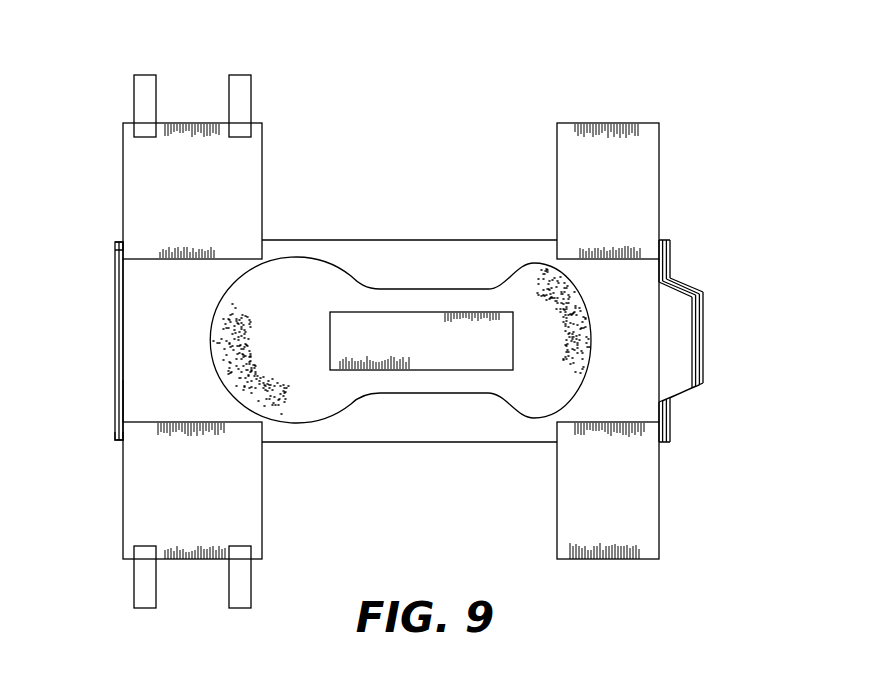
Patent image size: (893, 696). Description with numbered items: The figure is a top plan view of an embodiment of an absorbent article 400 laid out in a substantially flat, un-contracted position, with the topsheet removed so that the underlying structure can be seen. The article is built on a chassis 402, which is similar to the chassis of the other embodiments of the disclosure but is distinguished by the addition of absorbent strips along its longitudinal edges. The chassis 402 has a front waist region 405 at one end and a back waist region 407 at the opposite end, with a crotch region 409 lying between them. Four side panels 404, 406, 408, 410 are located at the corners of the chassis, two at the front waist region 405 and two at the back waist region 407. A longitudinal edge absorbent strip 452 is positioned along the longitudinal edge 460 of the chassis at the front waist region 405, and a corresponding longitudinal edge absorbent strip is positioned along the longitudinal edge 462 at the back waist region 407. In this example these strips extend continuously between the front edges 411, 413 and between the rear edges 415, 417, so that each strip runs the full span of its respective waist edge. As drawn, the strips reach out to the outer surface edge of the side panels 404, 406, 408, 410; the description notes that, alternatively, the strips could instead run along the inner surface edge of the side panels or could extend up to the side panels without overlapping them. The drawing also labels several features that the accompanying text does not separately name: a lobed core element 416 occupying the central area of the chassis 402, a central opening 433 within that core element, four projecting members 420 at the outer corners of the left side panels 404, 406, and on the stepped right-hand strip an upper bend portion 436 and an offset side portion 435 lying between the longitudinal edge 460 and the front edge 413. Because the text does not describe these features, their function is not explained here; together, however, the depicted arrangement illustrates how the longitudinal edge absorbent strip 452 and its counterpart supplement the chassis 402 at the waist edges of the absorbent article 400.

The absorbent article 400 is at (652, 86).
The chassis 402 is at (502, 240).
The side panel 404 is at (130, 196).
The front waist region 405 is at (645, 405).
The side panel 406 is at (130, 493).
The back waist region 407 is at (135, 404).
The side panel 408 is at (652, 541).
The crotch region 409 is at (411, 443).
The side panel 410 is at (650, 180).
The front edge 411 is at (669, 241).
The front edge 413 is at (672, 442).
The rear edge 415 is at (116, 242).
The lobed chamber 416 is at (217, 343).
The rear edge 417 is at (119, 441).
The terminal tab 420 is at (146, 88).
The central window 433 is at (388, 333).
The offset side strip portion 435 is at (706, 328).
The upper bend portion of side strip 436 is at (645, 296).
The longitudinal edge absorbent strip 452 is at (706, 367).
The longitudinal edge 460 is at (705, 306).
The longitudinal edge 462 is at (117, 302).